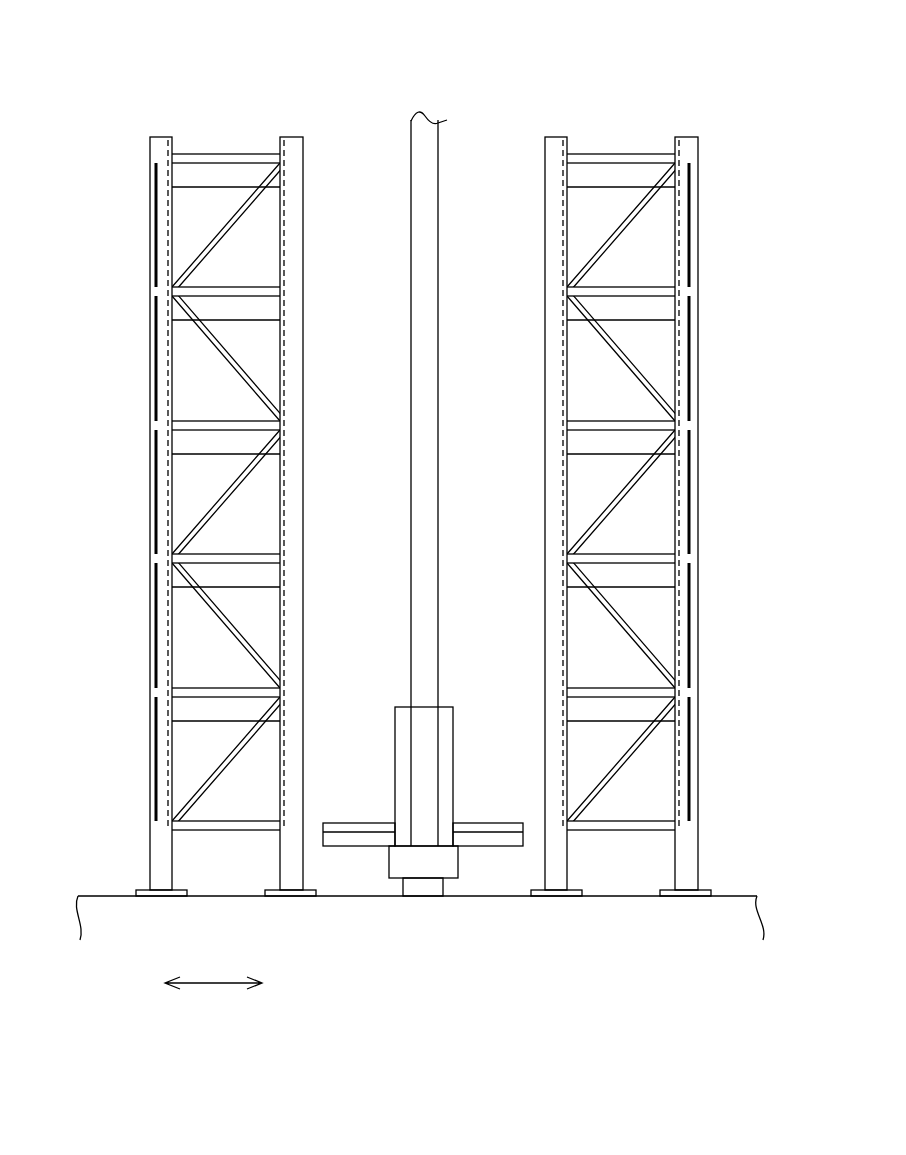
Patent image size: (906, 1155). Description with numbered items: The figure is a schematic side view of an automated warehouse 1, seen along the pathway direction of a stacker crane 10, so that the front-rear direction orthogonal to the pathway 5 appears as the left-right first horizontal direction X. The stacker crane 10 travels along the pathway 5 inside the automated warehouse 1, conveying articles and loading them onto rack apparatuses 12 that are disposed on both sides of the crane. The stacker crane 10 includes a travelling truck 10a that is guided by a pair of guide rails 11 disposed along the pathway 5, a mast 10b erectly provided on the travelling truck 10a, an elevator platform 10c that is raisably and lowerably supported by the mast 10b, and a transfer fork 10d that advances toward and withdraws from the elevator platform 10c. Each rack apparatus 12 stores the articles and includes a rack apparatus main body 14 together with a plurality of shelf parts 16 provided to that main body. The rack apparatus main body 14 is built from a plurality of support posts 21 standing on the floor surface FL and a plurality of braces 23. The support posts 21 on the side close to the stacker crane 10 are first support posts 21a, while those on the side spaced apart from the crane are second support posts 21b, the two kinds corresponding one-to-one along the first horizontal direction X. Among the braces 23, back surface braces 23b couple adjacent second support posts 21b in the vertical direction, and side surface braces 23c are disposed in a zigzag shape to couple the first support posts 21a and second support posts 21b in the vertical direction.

The automated warehouse 1 is at (374, 72).
The pathway 5 is at (368, 895).
The stacker crane 10 is at (457, 632).
The travelling truck 10a is at (458, 858).
The mast 10b is at (425, 480).
The elevator platform 10c is at (453, 758).
The transfer fork 10d is at (478, 822).
The guide rails 11 is at (427, 899).
The rack apparatus 12 is at (293, 127).
The rack apparatus main body 14 is at (152, 128).
The shelf parts 16 is at (220, 155).
The support posts 21 is at (315, 164).
The first support posts 21a is at (293, 268).
The second support posts 21b is at (148, 261).
The braces 23 is at (250, 357).
The back surface braces 23b is at (157, 203).
The side surface braces 23c is at (217, 347).
The floor surface FL is at (725, 894).
The first horizontal direction X is at (213, 971).